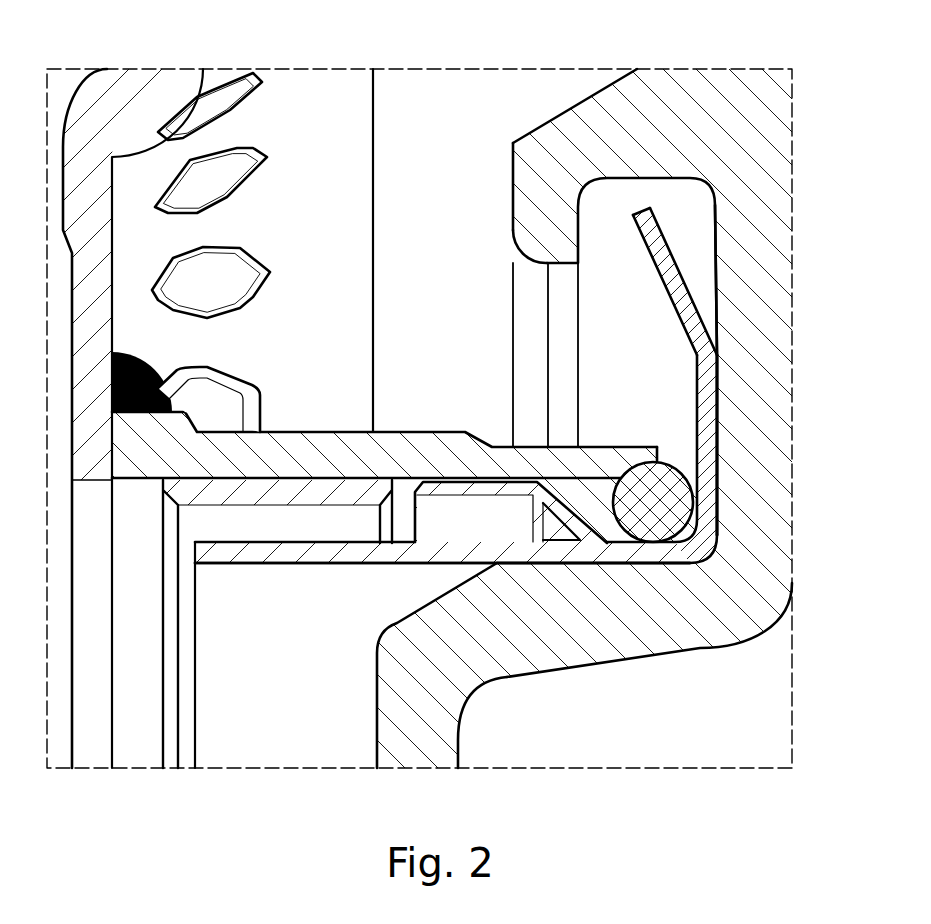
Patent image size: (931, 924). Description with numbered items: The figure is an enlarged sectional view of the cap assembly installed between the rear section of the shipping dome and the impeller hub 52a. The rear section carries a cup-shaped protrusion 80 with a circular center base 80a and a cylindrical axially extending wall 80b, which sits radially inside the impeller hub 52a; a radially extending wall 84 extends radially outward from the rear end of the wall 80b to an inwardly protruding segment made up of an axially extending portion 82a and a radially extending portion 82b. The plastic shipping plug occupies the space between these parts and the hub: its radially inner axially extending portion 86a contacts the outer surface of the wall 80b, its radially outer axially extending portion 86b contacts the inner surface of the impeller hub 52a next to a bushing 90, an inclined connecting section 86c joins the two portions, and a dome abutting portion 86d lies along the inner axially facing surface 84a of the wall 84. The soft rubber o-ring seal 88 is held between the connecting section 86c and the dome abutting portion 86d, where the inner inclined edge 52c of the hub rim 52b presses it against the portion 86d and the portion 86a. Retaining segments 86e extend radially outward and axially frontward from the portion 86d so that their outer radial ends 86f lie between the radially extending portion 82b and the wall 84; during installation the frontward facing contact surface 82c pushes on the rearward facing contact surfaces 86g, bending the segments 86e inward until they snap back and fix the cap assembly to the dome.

The impeller hub 52a is at (301, 421).
The rim 52b is at (657, 439).
The inner inclined edge 52c is at (647, 465).
The cup-shaped protrusion 80 is at (541, 439).
The center base 80a is at (400, 742).
The cylindrical axially extending wall 80b is at (658, 642).
The axially extending portion 82a is at (627, 125).
The radially extending portion 82b is at (540, 192).
The frontward facing contact surface 82c is at (522, 258).
The radially extending wall 84 is at (760, 407).
The inner axially facing radially extending surface 84a is at (717, 368).
The radially inner axially extending portion 86a is at (420, 557).
The radially outer axially extending portion 86b is at (503, 488).
The radially extending connecting section 86c is at (573, 525).
The radially extending dome abutting portion 86d is at (707, 482).
The retaining segments 86e is at (670, 282).
The outer radial ends 86f is at (640, 208).
The rearward facing contact surfaces 86g is at (663, 228).
The seal 88 is at (247, 578).
The bushing 90 is at (255, 493).